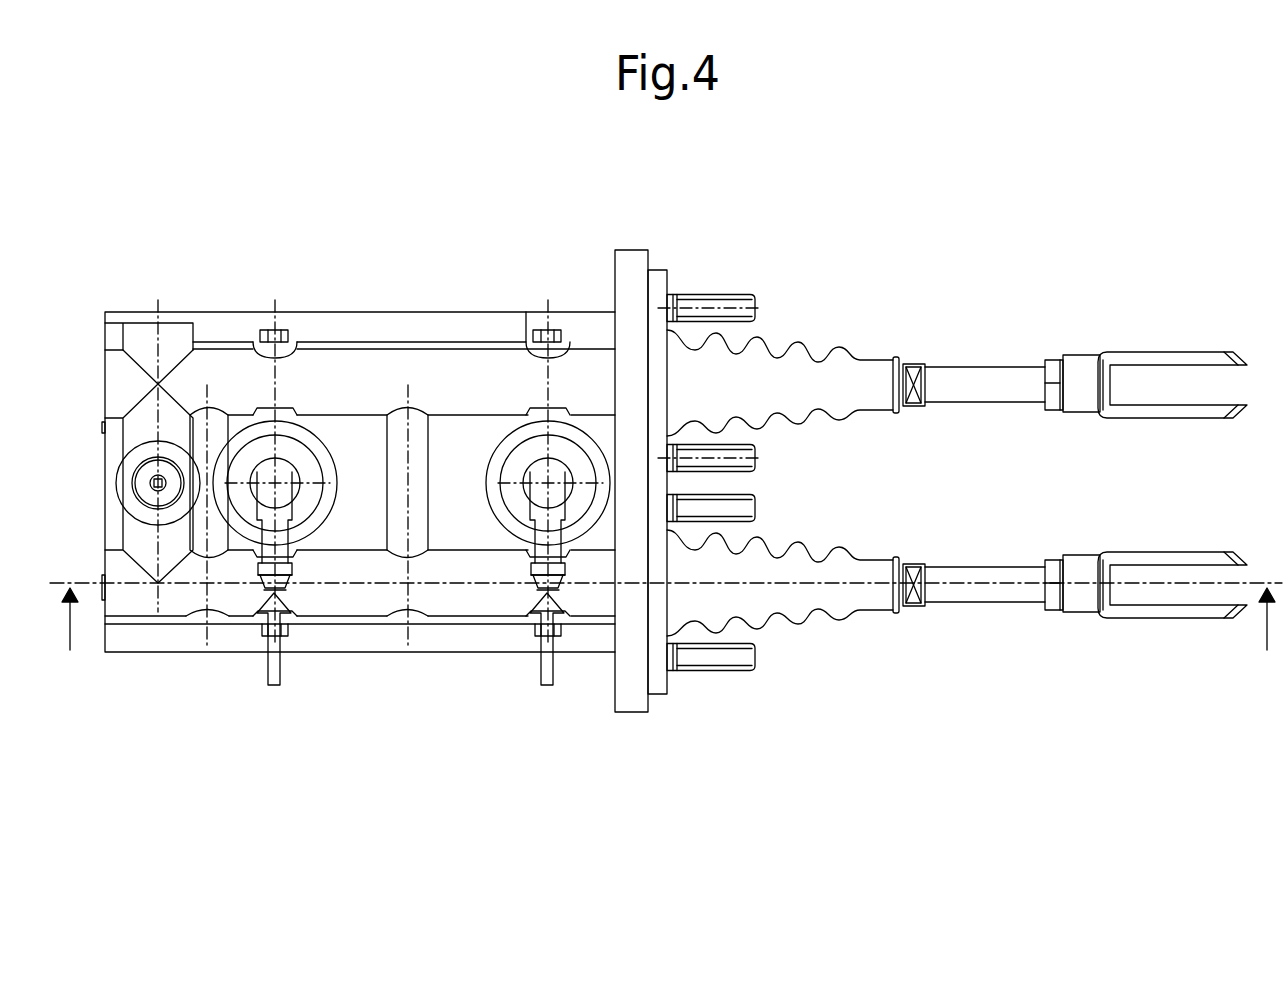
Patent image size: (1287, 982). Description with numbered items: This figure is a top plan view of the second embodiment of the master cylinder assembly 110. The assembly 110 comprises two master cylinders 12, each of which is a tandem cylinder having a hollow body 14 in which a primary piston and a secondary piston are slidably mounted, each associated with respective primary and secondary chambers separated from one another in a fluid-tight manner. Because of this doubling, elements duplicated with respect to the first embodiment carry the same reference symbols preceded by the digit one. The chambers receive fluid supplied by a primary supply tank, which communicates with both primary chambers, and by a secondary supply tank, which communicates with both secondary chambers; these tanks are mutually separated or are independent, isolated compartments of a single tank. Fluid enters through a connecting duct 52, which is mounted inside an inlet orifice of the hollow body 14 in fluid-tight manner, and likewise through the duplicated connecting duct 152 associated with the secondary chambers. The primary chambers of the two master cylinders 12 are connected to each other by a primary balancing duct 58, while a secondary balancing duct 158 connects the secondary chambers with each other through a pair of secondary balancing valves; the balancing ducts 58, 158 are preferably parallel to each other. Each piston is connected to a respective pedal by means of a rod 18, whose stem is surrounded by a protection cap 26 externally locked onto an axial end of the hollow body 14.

The master cylinder 12 is at (478, 349).
The hollow body 14 is at (400, 333).
The rod 18 is at (967, 375).
The protection cap 26 is at (840, 365).
The connecting duct 52 is at (571, 453).
The primary balancing duct 58 is at (400, 453).
The master cylinder assembly 110 is at (822, 208).
The connecting duct 152 is at (295, 453).
The secondary balancing duct 158 is at (208, 433).